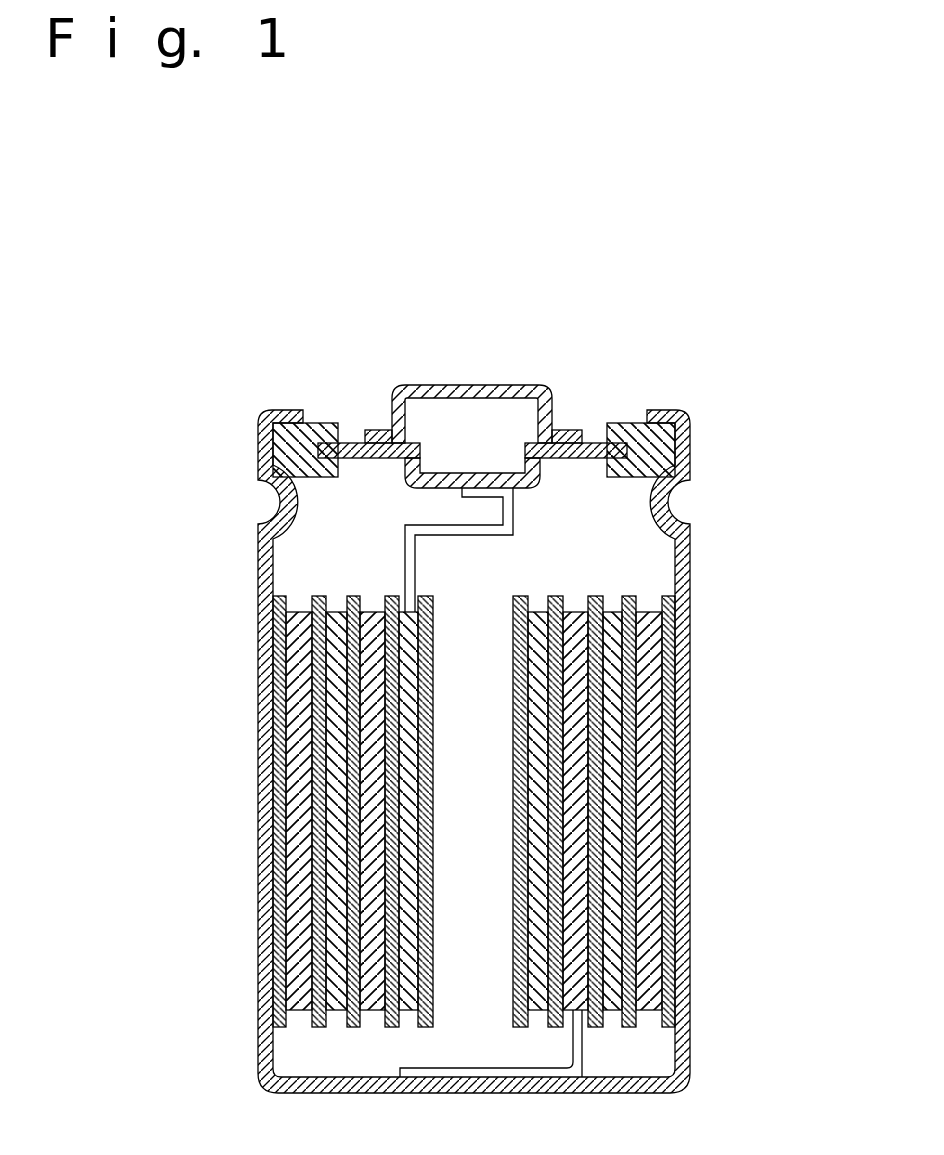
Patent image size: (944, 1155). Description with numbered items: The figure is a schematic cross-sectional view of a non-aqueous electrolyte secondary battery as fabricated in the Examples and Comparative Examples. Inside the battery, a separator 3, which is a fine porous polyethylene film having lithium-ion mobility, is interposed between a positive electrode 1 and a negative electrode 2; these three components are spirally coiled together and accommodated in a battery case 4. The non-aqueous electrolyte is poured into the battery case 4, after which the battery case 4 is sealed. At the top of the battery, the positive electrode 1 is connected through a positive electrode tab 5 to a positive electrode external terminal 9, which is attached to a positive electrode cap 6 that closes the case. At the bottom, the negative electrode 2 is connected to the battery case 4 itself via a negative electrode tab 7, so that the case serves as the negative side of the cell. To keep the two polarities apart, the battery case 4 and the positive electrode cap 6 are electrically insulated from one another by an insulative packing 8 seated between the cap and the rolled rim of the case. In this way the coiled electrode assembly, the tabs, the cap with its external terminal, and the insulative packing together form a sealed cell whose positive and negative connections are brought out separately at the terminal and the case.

The positive electrode 1 is at (634, 897).
The negative electrode 2 is at (663, 741).
The separator 3 is at (632, 822).
The battery case 4 is at (690, 659).
The positive electrode tab 5 is at (405, 572).
The positive electrode cap 6 is at (576, 460).
The negative electrode tab 7 is at (577, 1049).
The insulative packing 8 is at (322, 434).
The positive electrode external terminal 9 is at (502, 385).